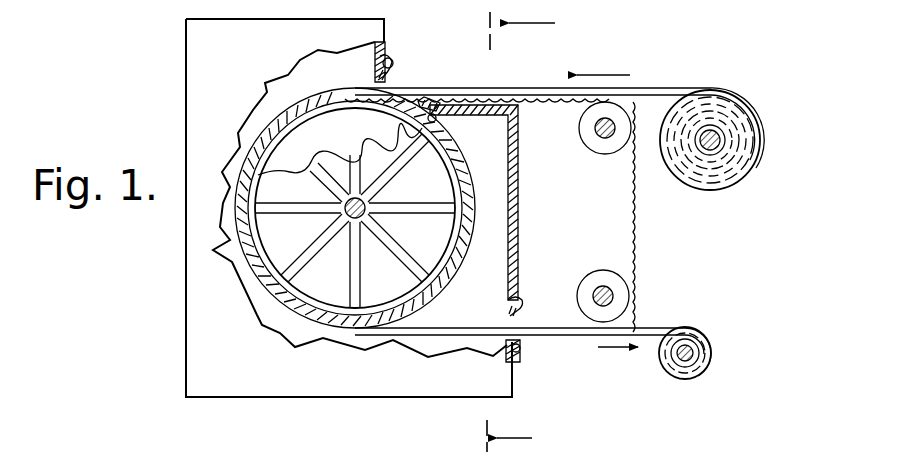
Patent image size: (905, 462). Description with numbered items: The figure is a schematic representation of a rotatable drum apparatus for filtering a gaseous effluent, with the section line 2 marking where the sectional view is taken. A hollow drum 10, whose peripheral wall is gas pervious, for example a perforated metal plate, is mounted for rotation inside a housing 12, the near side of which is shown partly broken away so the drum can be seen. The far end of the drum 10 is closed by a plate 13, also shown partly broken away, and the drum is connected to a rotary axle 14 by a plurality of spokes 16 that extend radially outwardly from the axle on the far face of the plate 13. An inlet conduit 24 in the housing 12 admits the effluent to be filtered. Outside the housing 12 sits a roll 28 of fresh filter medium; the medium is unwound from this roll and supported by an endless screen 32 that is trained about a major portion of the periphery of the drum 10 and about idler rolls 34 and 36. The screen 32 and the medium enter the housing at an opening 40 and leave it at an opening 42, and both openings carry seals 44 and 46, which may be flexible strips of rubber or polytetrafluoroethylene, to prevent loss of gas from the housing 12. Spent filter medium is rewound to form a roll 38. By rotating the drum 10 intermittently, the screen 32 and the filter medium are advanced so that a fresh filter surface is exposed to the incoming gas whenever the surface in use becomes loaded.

The hollow drum 10 is at (268, 242).
The housing 12 is at (202, 378).
The plate 13 is at (338, 146).
The rotary axle 14 is at (372, 205).
The spokes 16 is at (352, 272).
The inlet conduit 24 is at (200, 17).
The roll of fresh filter medium 28 is at (748, 113).
The endless screen 32 is at (636, 222).
The idler roll 34 is at (593, 133).
The idler roll 36 is at (590, 280).
The roll of spent filter medium 38 is at (705, 337).
The opening 40 is at (393, 73).
The opening 42 is at (510, 344).
The seal 44 is at (376, 76).
The seal 46 is at (508, 302).
The section line 2- 2 is at (534, 234).